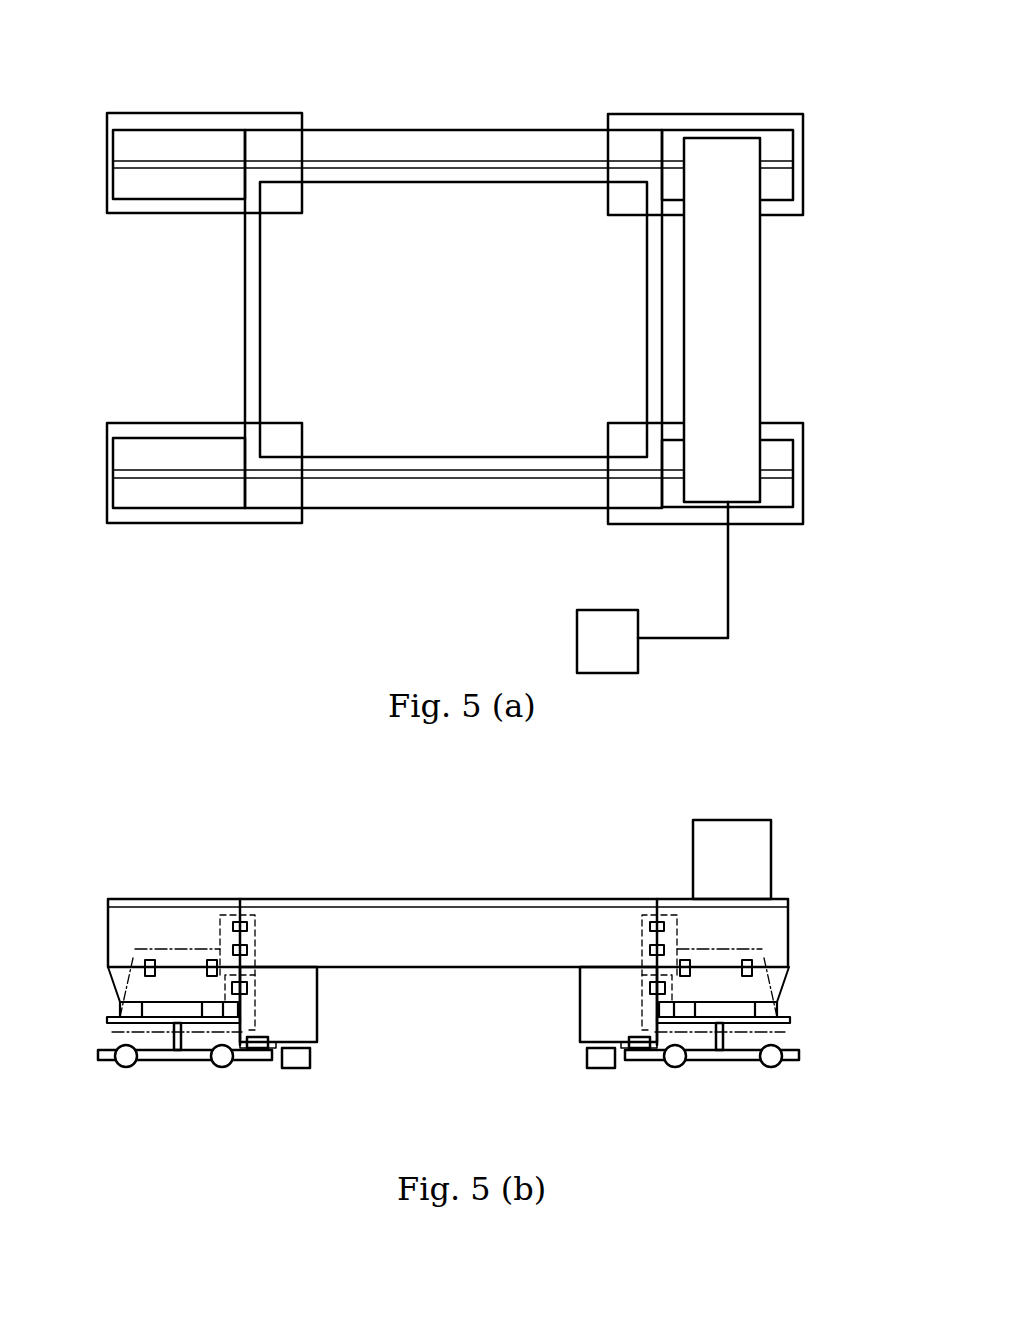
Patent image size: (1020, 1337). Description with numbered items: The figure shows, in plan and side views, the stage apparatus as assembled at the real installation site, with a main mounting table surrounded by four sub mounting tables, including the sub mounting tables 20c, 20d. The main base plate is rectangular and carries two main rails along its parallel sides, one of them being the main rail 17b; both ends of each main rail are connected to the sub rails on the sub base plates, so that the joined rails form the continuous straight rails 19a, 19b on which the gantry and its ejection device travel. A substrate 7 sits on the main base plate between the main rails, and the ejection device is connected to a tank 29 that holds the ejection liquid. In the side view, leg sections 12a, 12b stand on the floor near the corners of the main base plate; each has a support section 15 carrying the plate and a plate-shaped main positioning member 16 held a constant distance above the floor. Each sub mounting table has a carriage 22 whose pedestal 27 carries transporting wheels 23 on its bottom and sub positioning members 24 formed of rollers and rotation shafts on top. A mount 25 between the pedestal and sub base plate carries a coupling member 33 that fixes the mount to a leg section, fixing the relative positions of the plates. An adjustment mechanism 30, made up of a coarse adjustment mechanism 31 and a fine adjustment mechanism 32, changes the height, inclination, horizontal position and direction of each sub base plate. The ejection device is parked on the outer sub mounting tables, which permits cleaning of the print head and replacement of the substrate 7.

The substrate 7 is at (260, 267).
The leg section 12a is at (372, 1022).
The leg section 12b is at (522, 985).
The support section 15 is at (310, 1062).
The main positioning member 16 is at (317, 1027).
The main rail 17b is at (362, 480).
The rail 19a is at (266, 146).
The rail 19b is at (251, 458).
The sub mounting table 20c is at (729, 107).
The sub mounting table 20d is at (172, 130).
The carriage 22 is at (177, 1064).
The transporting wheel 23 is at (222, 1067).
The sub positioning member 24 is at (258, 1050).
The mount 25 is at (118, 1000).
The pedestal 27 is at (155, 1058).
The tank 29 is at (577, 655).
The adjustment mechanism 30 is at (112, 975).
The coarse adjustment mechanism 31 is at (212, 1002).
The fine adjustment mechanism 32 is at (232, 926).
The coupling member 33 is at (248, 988).